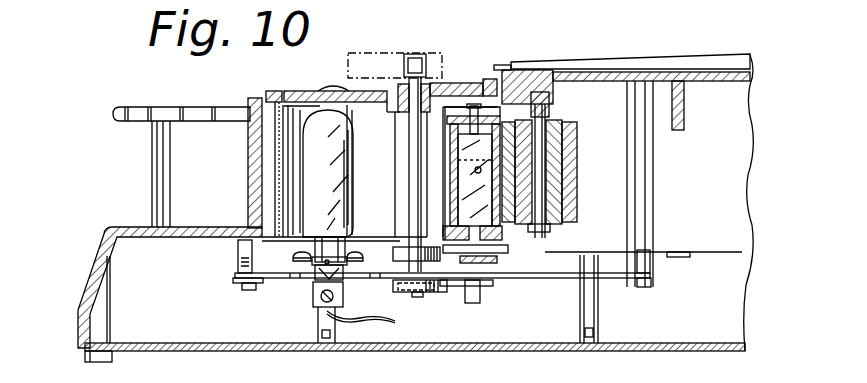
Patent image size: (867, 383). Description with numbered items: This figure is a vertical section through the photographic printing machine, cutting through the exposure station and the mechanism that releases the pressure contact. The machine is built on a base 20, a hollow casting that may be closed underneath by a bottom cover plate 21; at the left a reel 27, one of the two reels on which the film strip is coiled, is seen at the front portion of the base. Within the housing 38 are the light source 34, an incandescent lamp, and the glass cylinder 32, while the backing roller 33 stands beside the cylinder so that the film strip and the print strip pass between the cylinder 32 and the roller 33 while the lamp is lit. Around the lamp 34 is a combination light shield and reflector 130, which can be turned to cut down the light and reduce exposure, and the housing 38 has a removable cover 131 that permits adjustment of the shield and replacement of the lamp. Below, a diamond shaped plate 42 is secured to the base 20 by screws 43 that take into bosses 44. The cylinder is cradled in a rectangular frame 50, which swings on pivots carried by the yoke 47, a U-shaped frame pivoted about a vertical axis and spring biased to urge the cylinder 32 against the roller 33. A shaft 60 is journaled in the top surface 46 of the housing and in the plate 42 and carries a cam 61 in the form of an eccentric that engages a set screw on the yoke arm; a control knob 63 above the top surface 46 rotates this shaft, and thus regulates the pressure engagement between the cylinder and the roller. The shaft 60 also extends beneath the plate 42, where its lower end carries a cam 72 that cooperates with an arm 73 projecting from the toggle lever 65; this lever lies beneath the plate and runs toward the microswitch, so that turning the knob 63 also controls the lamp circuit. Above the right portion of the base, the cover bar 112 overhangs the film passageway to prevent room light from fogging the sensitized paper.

The base 20 is at (107, 250).
The bottom cover plate 21 is at (688, 343).
The reel 27 is at (127, 106).
The glass cylinder 32 is at (457, 181).
The backing roller 33 is at (578, 170).
The light source 34 is at (318, 170).
The housing 38 is at (262, 182).
The diamond shaped plate 42 is at (285, 278).
The screws 43 is at (243, 283).
The bosses 44 is at (238, 255).
The top surface 46 is at (452, 83).
The yoke 47 is at (497, 262).
The rectangular frame 50 is at (445, 127).
The shaft 60 is at (410, 151).
The cam 61 is at (400, 247).
The control knob 63 is at (419, 55).
The toggle lever 65 is at (462, 287).
The cam 72 is at (404, 296).
The arm 73 is at (482, 297).
The cover bar 112 is at (502, 65).
The light shield and reflector 130 is at (275, 147).
The removable cover 131 is at (298, 91).